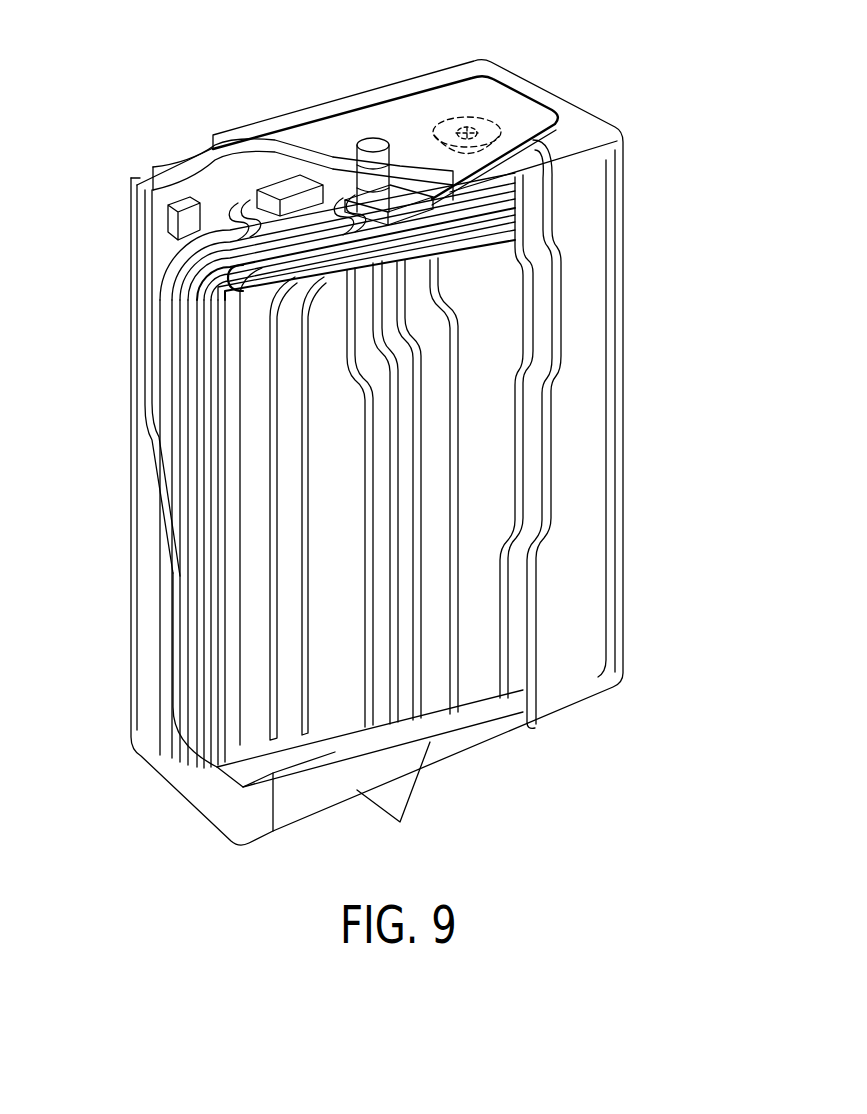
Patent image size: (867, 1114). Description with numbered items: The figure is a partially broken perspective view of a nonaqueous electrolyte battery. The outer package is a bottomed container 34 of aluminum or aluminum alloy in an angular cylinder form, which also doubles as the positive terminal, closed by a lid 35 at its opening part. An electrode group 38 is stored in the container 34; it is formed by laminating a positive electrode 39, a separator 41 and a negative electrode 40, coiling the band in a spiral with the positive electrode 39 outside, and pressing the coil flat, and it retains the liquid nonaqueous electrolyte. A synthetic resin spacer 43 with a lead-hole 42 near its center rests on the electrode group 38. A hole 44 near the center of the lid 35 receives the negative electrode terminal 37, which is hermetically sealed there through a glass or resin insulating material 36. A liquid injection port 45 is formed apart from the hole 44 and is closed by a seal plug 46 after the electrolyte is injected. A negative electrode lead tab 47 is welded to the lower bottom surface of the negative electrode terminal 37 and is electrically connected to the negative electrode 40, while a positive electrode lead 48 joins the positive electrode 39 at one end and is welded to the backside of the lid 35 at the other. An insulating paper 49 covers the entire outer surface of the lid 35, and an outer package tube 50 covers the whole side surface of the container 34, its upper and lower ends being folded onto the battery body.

The bottomed container 34 is at (549, 310).
The lid 35 is at (533, 170).
The insulating material 36 is at (400, 165).
The negative electrode terminal 37 is at (372, 139).
The electrode group 38 is at (80, 490).
The positive electrode 39 is at (320, 583).
The negative electrode 40 is at (255, 490).
The separator 41 is at (285, 537).
The lead-hole 42 is at (475, 244).
The spacer 43 is at (170, 213).
The hole 44 is at (340, 168).
The liquid injection port 45 is at (490, 120).
The seal plug 46 is at (467, 127).
The negative electrode lead tab 47 is at (400, 225).
The positive electrode lead 48 is at (240, 207).
The insulating paper 49 is at (197, 167).
The outer package tube 50 is at (590, 508).